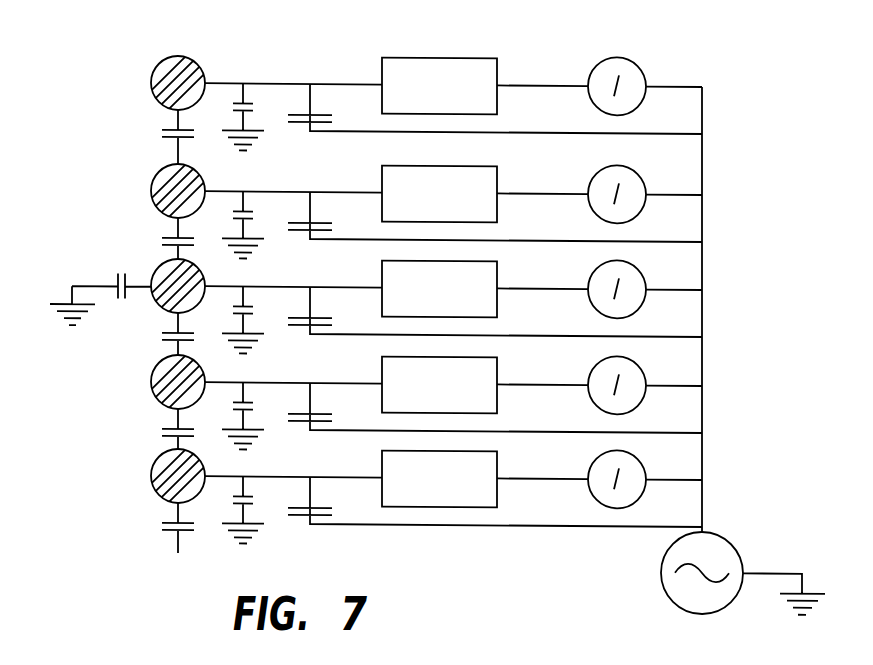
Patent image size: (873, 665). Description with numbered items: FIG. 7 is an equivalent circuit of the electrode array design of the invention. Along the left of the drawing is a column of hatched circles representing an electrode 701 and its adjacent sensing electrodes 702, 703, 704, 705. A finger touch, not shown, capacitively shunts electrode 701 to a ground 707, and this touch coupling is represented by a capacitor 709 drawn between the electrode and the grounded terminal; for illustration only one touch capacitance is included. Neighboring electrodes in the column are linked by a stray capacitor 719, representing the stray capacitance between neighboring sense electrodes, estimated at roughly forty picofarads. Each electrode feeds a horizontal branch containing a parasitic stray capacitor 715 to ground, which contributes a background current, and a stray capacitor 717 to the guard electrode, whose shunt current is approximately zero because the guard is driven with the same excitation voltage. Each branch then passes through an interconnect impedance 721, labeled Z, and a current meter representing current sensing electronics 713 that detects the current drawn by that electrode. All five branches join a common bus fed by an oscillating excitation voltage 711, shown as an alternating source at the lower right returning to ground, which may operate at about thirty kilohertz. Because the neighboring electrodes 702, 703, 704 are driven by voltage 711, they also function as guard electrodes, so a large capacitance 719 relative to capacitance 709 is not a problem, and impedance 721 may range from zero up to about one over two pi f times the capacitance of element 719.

The electrode 701 is at (158, 266).
The adjacent sensing electrode 702 is at (151, 81).
The adjacent sensing electrode 703 is at (151, 183).
The adjacent sensing electrode 704 is at (151, 392).
The adjacent sensing electrode 705 is at (151, 472).
The ground 707 is at (68, 298).
The touch capacitor 709 is at (127, 300).
The oscillating excitation voltage 711 is at (730, 540).
The current sensing electronics 713 is at (642, 65).
The parasitic stray capacitor to ground 715 is at (246, 104).
The stray capacitor to guard electrode 717 is at (319, 112).
The stray capacitor between neighboring sense electrodes 719 is at (163, 129).
The interconnect impedance 721 is at (465, 55).